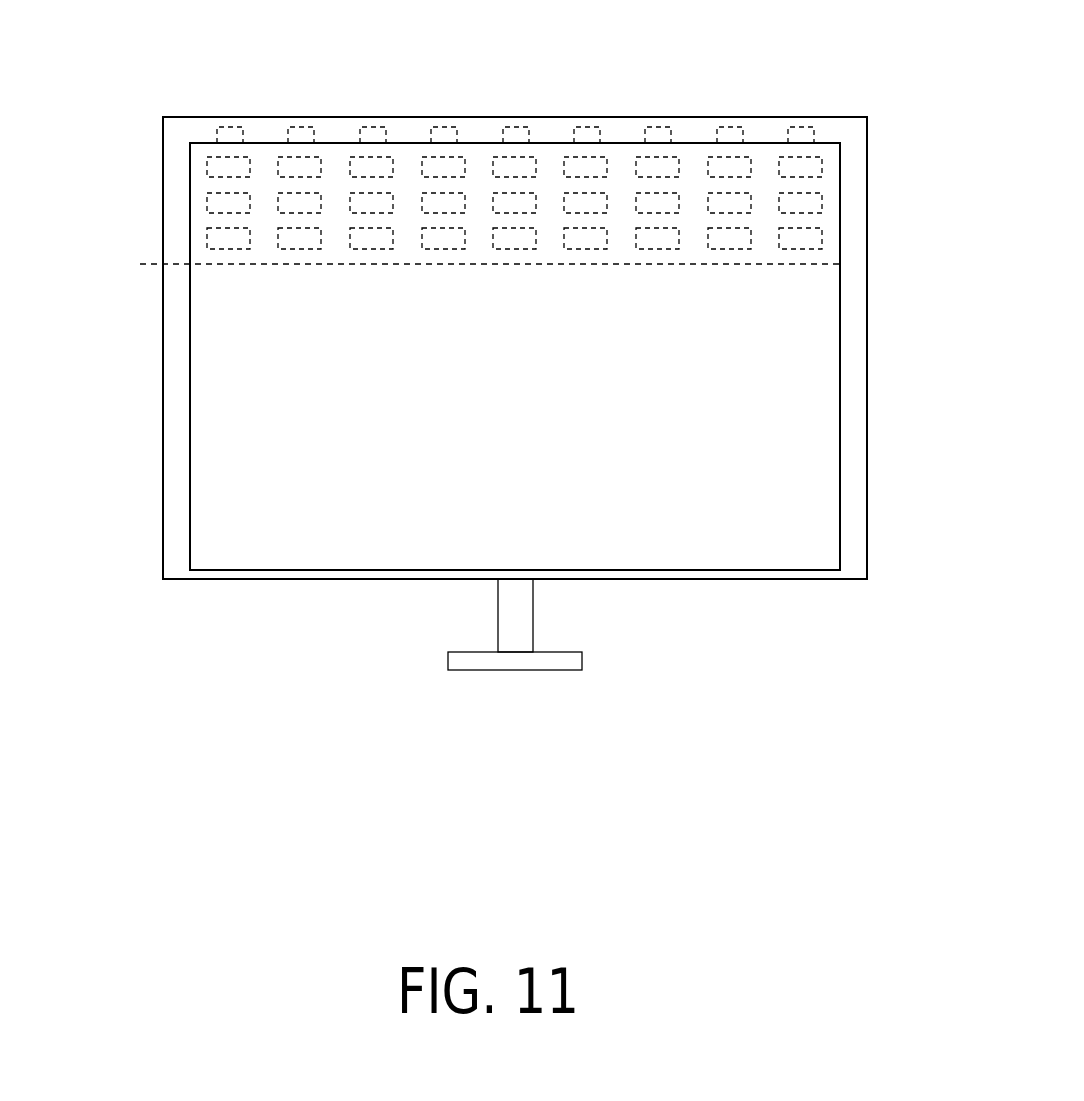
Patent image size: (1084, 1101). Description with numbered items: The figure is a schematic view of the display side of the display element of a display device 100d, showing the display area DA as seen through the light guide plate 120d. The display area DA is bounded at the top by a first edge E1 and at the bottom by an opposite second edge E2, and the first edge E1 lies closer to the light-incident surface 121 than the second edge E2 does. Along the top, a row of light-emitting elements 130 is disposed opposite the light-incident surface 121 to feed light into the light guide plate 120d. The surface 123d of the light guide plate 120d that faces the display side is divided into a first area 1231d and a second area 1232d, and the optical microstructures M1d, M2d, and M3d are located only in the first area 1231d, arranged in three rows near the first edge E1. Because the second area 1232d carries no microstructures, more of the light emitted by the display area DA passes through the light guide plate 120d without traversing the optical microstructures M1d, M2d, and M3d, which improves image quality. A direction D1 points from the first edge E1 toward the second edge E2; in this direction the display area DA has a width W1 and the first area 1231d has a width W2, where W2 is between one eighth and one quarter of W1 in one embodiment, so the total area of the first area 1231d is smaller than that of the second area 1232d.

The display device 100d is at (128, 25).
The light guide plate 120d is at (630, 520).
The light-incident surface 121 is at (557, 157).
The display area DA is at (297, 500).
The light-emitting element 130 is at (302, 127).
The optical microstructure M1d is at (815, 167).
The optical microstructure M2d is at (808, 197).
The optical microstructure M3d is at (810, 236).
The first area 1231d is at (842, 195).
The second area 1232d is at (842, 445).
The surface 123d is at (893, 696).
The first edge E1 is at (692, 142).
The second edge E2 is at (717, 571).
The direction D1 is at (57, 77).
The width of the display area W1 is at (190, 552).
The width of the first area W2 is at (145, 143).